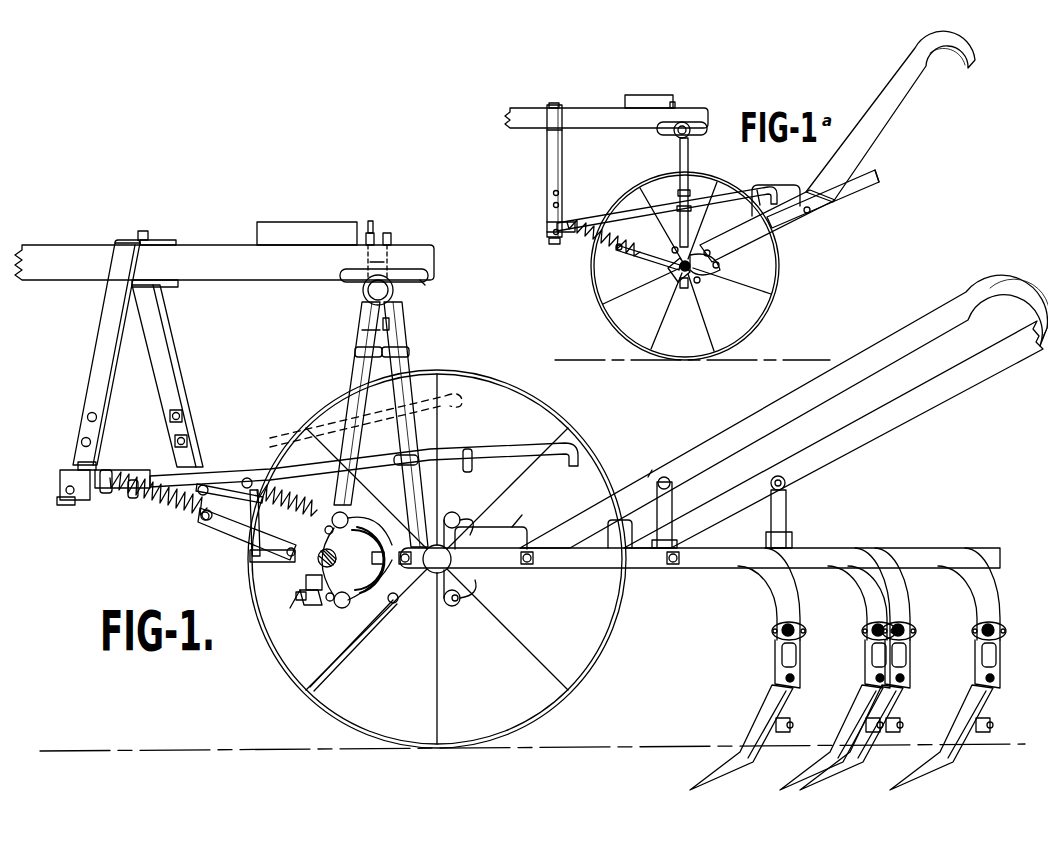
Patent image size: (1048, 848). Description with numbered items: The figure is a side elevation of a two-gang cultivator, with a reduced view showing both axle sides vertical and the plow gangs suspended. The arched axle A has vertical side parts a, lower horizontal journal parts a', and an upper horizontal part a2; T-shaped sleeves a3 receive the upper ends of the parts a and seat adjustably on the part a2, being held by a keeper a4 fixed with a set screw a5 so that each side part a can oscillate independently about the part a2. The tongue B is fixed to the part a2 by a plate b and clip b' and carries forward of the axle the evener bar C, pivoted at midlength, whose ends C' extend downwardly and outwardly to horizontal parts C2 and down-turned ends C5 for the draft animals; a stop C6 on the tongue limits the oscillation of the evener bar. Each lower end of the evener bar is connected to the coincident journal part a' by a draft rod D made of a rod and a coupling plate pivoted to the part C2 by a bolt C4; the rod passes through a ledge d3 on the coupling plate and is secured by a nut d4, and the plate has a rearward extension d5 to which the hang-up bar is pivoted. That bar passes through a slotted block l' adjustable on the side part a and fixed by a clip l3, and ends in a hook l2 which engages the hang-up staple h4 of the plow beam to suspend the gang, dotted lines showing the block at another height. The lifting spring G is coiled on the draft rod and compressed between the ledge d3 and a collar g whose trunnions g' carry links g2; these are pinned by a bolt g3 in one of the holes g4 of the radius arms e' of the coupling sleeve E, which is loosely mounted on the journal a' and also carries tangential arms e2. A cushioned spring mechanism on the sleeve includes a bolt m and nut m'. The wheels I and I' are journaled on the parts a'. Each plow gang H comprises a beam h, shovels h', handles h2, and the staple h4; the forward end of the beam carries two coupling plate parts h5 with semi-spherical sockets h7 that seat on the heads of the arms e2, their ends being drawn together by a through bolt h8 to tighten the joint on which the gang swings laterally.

In FIG. 1, the tongue B is at (48, 252).
In FIG. 1A, the tongue B is at (600, 112).
In FIG. 1, the plate b is at (369, 285).
In FIG. 1A, the plate b is at (668, 134).
In FIG. 1, the clip b' is at (381, 222).
In FIG. 1A, the clip b' is at (687, 96).
In FIG. 1, the evener bar C is at (106, 352).
In FIG. 1A, the evener bar C is at (538, 171).
In FIG. 1, the ends of the evener bar C' is at (168, 373).
In FIG. 1A, the ends of the evener bar C' is at (540, 160).
In FIG. 1, the horizontal part of evener bar end C2 is at (60, 482).
In FIG. 1A, the horizontal part of evener bar end C2 is at (547, 228).
In FIG. 1, the bolt C4 is at (93, 373).
In FIG. 1, the down-turned end C5 is at (57, 499).
In FIG. 1A, the down-turned end C5 is at (550, 241).
In FIG. 1, the stop C6 is at (150, 238).
In FIG. 1A, the stop C6 is at (562, 106).
In FIG. 1, the arched axle A is at (374, 424).
In FIG. 1, the vertical side parts of the axle a is at (371, 360).
In FIG. 1A, the vertical side parts of the axle a is at (696, 192).
In FIG. 1, the upper horizontal part of the axle a2 is at (368, 298).
In FIG. 1A, the upper horizontal part of the axle a2 is at (676, 136).
In FIG. 1, the T-shaped sleeve a3 is at (392, 322).
In FIG. 1, the keeper a4 is at (395, 282).
In FIG. 1, the set screw a5 is at (366, 262).
In FIG. 1, the lower horizontal journal end part of the axle a' is at (311, 603).
In FIG. 1A, the lower horizontal journal end part of the axle a' is at (689, 298).
In FIG. 1, the wheel I is at (364, 456).
In FIG. 1A, the wheel I is at (667, 202).
In FIG. 1, the wheel I' is at (437, 559).
In FIG. 1A, the wheel I' is at (685, 266).
In FIG. 1, the slotted block l' is at (376, 416).
In FIG. 1A, the slotted block l' is at (677, 189).
In FIG. 1, the hook l2 is at (473, 466).
In FIG. 1A, the hook l2 is at (741, 208).
In FIG. 1, the clip l3 is at (402, 465).
In FIG. 1, the ledge d3 is at (104, 478).
In FIG. 1, the nut d4 is at (106, 494).
In FIG. 1, the rearward extension of coupling plate d5 is at (134, 499).
In FIG. 1, the lifting spring G is at (213, 505).
In FIG. 1A, the lifting spring G is at (586, 248).
In FIG. 1, the collar g is at (257, 515).
In FIG. 1, the trunnions g' is at (209, 532).
In FIG. 1, the links g2 is at (229, 501).
In FIG. 1A, the links g2 is at (648, 262).
In FIG. 1, the bolt g3 is at (272, 568).
In FIG. 1, the holes in radius arm g4 is at (247, 537).
In FIG. 1, the draft rod D is at (264, 523).
In FIG. 1, the coupling sleeve E is at (322, 561).
In FIG. 1, the radius arms e' is at (306, 566).
In FIG. 1A, the radius arms e' is at (668, 284).
In FIG. 1, the tangential arms e2 is at (354, 599).
In FIG. 1, the bolt m is at (295, 600).
In FIG. 1, the nut m' is at (271, 608).
In FIG. 1, the plow gang H is at (699, 573).
In FIG. 1A, the plow gang H is at (823, 206).
In FIG. 1, the plow beam h is at (469, 573).
In FIG. 1A, the plow beam h is at (767, 226).
In FIG. 1, the plows or shovels h' is at (848, 669).
In FIG. 1, the handles h2 is at (775, 406).
In FIG. 1A, the handles h2 is at (882, 120).
In FIG. 1, the hang up staple h4 is at (518, 522).
In FIG. 1A, the hang up staple h4 is at (777, 188).
In FIG. 1, the beam coupling plate parts h5 is at (484, 538).
In FIG. 1A, the beam coupling plate parts h5 is at (714, 270).
In FIG. 1, the sockets h7 is at (336, 518).
In FIG. 1A, the sockets h7 is at (673, 248).
In FIG. 1, the through bolt h8 is at (305, 612).